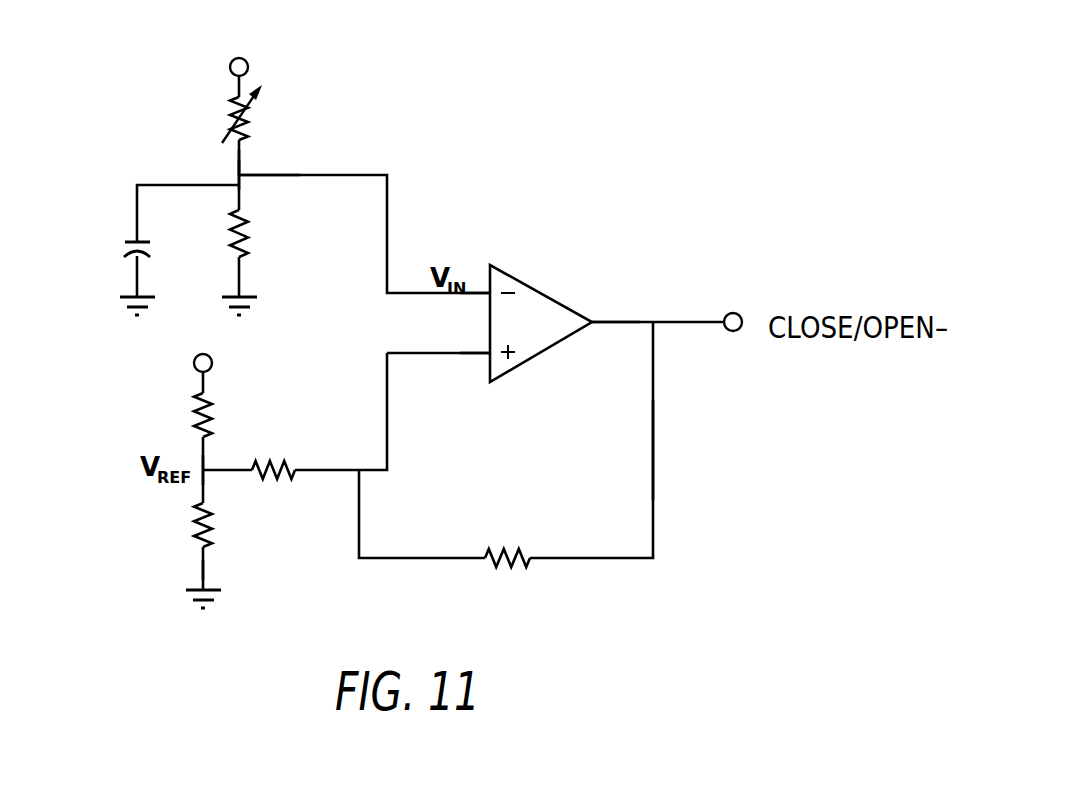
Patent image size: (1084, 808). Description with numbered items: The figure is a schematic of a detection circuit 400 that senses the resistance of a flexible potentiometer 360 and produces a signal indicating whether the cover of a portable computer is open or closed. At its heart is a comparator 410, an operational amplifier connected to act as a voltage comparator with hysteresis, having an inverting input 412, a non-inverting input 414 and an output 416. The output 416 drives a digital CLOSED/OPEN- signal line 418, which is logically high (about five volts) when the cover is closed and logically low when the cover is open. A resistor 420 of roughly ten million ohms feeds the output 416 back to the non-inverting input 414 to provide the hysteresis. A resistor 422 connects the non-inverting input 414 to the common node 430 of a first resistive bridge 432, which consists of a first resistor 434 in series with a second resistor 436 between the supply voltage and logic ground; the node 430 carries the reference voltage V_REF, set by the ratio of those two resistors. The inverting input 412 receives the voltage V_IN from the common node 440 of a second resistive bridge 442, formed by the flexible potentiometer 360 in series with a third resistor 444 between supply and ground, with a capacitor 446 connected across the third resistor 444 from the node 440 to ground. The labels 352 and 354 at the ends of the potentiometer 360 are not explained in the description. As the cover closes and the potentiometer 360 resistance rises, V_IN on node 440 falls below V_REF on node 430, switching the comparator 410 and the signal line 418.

The input terminal 352 is at (237, 88).
The flexible potentiometer 360 is at (250, 120).
The second resistive bridge 442 is at (150, 112).
The node 354 is at (237, 165).
The common node of the second resistive bridge 440 is at (241, 173).
The capacitor 446 is at (127, 242).
The third resistor 444 is at (243, 227).
The comparator 410 is at (540, 287).
The inverting input 412 is at (487, 291).
The non-inverting input 414 is at (488, 356).
The output 416 is at (595, 326).
The CLOSED/OPEN- signal line 418 is at (677, 320).
The detection circuit 400 is at (714, 436).
The resistor 420 is at (510, 555).
The first resistor 434 is at (195, 418).
The resistor 422 is at (267, 460).
The common node of the first resistive bridge 430 is at (205, 472).
The second resistor 436 is at (213, 535).
The first resistive bridge 432 is at (143, 563).